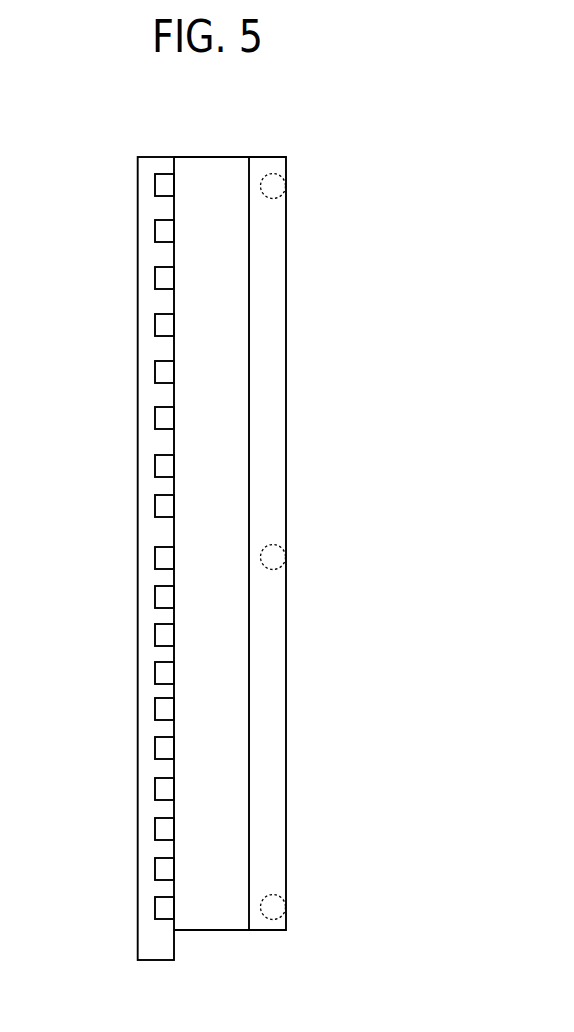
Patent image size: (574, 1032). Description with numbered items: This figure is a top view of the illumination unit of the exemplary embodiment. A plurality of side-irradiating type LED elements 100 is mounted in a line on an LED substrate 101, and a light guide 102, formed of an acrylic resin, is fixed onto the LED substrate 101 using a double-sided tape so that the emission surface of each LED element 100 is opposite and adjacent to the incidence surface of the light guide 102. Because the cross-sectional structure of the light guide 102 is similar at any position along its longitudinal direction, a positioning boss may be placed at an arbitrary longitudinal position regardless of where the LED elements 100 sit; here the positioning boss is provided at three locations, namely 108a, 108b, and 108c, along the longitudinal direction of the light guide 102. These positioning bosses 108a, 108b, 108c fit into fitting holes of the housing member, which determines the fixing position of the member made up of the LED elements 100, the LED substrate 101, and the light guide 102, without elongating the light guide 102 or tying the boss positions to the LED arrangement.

The LED element 100 is at (162, 184).
The LED substrate 101 is at (137, 378).
The light guide 102 is at (188, 653).
The positioning boss 108a is at (283, 918).
The positioning boss 108b is at (283, 568).
The positioning boss 108c is at (283, 197).